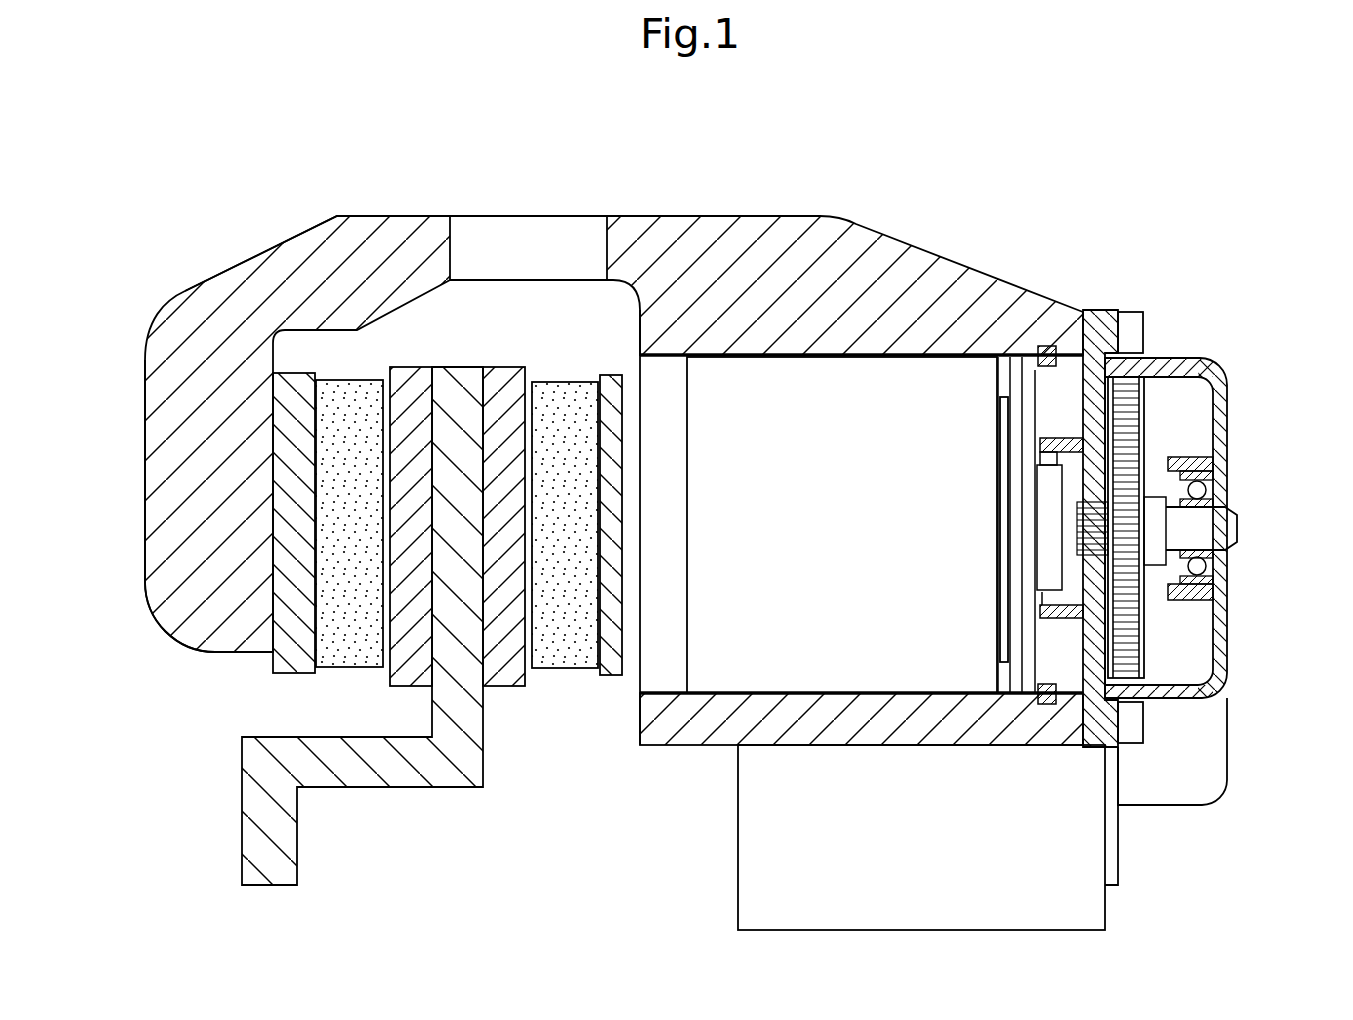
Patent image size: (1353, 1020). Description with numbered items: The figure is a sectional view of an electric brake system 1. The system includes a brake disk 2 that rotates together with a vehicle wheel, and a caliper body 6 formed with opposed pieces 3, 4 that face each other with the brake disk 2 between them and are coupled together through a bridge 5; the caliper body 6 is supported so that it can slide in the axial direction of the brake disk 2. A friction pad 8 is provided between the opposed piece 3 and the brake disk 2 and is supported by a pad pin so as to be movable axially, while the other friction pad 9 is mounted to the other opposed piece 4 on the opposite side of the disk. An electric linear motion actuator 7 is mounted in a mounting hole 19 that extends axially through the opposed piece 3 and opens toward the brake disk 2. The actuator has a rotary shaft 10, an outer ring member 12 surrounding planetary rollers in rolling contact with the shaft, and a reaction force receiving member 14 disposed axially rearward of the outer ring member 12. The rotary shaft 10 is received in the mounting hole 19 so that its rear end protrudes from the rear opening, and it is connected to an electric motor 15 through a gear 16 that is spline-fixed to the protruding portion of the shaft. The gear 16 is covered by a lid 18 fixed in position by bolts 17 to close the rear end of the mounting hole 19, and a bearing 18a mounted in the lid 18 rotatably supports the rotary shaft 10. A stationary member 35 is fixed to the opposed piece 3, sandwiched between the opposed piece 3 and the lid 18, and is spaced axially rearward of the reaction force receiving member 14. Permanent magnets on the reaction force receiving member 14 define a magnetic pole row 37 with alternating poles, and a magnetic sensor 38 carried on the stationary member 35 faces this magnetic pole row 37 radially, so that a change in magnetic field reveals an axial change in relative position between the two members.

The electric brake system 1 is at (150, 320).
The brake disk 2 is at (240, 843).
The opposed piece 3 is at (677, 735).
The opposed piece 4 is at (155, 598).
The bridge 5 is at (423, 235).
The caliper body 6 is at (143, 400).
The electric linear motion actuator 7 is at (835, 350).
The friction pad 8 is at (565, 407).
The friction pad 9 is at (346, 385).
The rotary shaft 10 is at (1220, 530).
The outer ring member 12 is at (778, 377).
The reaction force receiving member 14 is at (1025, 355).
The electric motor 15 is at (748, 875).
The gear 16 is at (1147, 418).
The bolts 17 is at (1133, 330).
The lid 18 is at (1225, 372).
The bearing 18a is at (1218, 490).
The mounting hole 19 is at (922, 354).
The stationary member 35 is at (1093, 322).
The magnetic pole row 37 is at (1040, 462).
The magnetic sensor 38 is at (1040, 450).